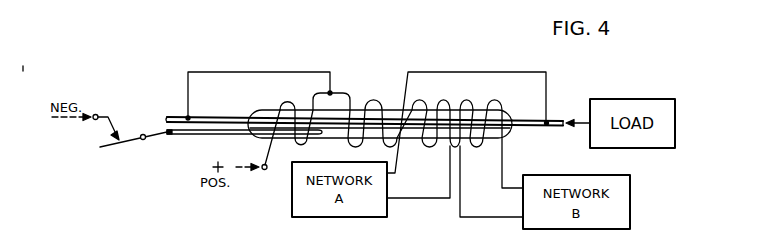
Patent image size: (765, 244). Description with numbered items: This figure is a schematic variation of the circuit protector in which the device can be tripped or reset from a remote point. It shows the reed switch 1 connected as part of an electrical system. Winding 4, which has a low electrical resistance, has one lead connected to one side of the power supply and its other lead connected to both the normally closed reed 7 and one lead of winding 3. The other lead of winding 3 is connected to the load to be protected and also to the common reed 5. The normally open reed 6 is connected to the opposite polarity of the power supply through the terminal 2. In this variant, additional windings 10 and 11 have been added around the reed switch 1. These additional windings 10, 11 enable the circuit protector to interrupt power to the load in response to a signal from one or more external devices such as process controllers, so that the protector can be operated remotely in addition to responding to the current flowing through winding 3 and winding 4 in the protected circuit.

The reed switch 1 is at (266, 110).
The terminal 2 is at (142, 134).
The winding 3 is at (379, 100).
The winding 4 is at (301, 143).
The common reed 5 is at (548, 127).
The normally open reed 6 is at (210, 136).
The normally closed reed 7 is at (174, 116).
The additional winding 10 is at (429, 147).
The additional winding 11 is at (478, 147).